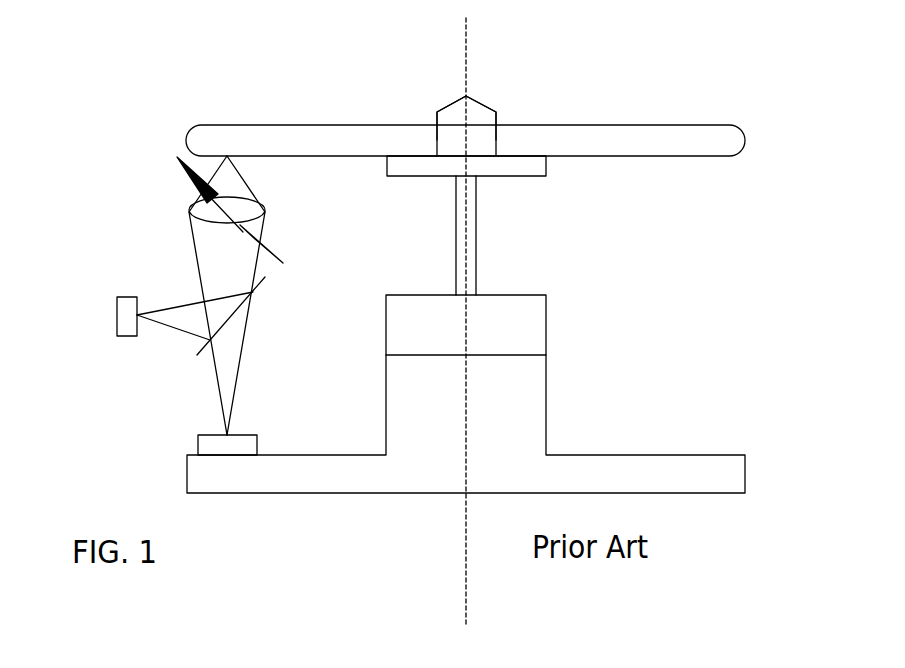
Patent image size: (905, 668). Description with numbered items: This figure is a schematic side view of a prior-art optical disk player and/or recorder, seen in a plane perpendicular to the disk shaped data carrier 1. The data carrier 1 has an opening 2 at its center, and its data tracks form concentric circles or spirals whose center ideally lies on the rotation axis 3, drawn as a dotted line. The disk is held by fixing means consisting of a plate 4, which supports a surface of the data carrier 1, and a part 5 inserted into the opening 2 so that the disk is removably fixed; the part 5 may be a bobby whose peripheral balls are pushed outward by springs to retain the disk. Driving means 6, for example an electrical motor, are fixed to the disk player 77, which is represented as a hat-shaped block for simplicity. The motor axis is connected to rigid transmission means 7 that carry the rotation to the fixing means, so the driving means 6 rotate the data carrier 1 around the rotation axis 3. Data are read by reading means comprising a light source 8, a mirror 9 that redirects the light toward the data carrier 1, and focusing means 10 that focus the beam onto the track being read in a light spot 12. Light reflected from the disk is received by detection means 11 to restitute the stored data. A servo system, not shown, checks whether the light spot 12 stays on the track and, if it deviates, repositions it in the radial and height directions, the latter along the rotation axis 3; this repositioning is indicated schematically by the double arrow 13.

The disk shaped data carrier 1 is at (490, 111).
The opening 2 is at (437, 138).
The rotation axis 3 is at (469, 37).
The plate 4 is at (520, 165).
The part of the fixing means 5 is at (483, 125).
The driving means 6 is at (525, 335).
The rigid transmission means 7 is at (472, 259).
The light source 8 is at (117, 313).
The mirror 9 is at (260, 282).
The focusing means 10 is at (197, 213).
The detection means 11 is at (202, 447).
The light spot 12 is at (227, 156).
The double arrow 13 is at (186, 179).
The disk player 77 is at (622, 475).